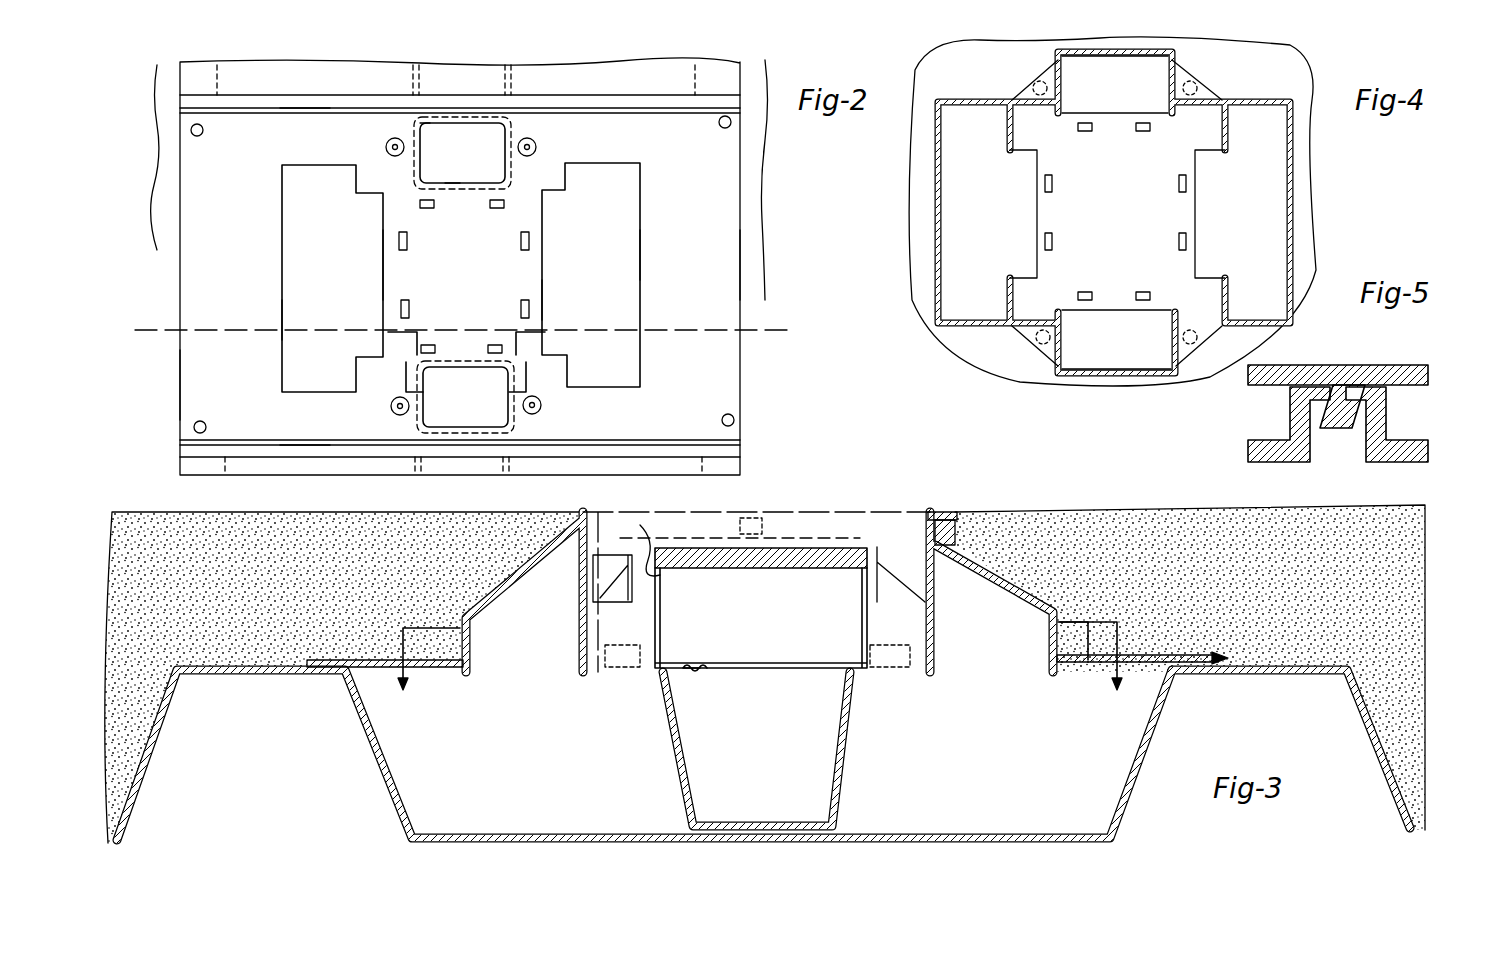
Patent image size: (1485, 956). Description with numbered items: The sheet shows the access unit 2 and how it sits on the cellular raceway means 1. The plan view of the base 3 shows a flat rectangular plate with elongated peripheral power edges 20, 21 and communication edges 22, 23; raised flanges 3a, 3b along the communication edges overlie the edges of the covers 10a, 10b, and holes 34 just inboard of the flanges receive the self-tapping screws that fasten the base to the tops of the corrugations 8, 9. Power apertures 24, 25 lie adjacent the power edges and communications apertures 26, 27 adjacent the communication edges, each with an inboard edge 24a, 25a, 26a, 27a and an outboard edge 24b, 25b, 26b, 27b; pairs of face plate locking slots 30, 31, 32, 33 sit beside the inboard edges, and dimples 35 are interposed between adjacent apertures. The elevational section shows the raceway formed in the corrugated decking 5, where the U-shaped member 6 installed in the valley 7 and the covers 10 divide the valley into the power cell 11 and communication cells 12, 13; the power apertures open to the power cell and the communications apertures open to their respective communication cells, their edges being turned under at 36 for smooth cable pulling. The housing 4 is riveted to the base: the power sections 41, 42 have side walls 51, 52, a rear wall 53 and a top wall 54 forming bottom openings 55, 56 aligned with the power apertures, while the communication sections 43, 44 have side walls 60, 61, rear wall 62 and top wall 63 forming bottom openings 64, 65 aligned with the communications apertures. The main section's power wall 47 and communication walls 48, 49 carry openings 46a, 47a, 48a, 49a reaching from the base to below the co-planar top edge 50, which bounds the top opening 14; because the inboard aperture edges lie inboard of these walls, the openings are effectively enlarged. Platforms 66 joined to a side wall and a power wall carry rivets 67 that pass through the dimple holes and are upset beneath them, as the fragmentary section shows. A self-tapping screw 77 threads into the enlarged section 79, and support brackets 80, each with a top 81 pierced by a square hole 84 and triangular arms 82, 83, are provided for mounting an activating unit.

In FIG. 3, the cellular raceway means 1 is at (944, 843).
In FIG. 3, the access unit 2 is at (829, 506).
In FIG. 2, the base 3 is at (795, 290).
In FIG. 3, the base 3 is at (373, 667).
In FIG. 2, the raised flange 3a is at (306, 440).
In FIG. 2, the raised flange 3b is at (306, 108).
In FIG. 3, the raised flange 3b is at (326, 660).
In FIG. 3, the housing 4 is at (580, 518).
In FIG. 3, the corrugated decking 5 is at (128, 846).
In FIG. 2, the U-shaped member 6 is at (413, 476).
In FIG. 3, the valley 7 is at (1073, 832).
In FIG. 2, the corrugation 8 is at (236, 476).
In FIG. 3, the corrugation 8 is at (391, 783).
In FIG. 2, the corrugation 9 is at (703, 476).
In FIG. 3, the corrugation 9 is at (1144, 738).
In FIG. 4, the covers 10 is at (1122, 261).
In FIG. 2, the cover 10a is at (215, 470).
In FIG. 3, the cover 10a is at (300, 660).
In FIG. 2, the cover 10b is at (186, 80).
In FIG. 2, the power cell 11 is at (421, 88).
In FIG. 3, the power cell 11 is at (774, 779).
In FIG. 2, the communication cell 12 is at (228, 84).
In FIG. 3, the communication cell 12 is at (542, 781).
In FIG. 2, the communication cell 13 is at (690, 100).
In FIG. 3, the communication cell 13 is at (1002, 766).
In FIG. 3, the top opening 14 is at (595, 515).
In FIG. 2, the power edge 20 is at (394, 98).
In FIG. 2, the power edge 21 is at (546, 460).
In FIG. 2, the communication edge 22 is at (182, 386).
In FIG. 3, the communication edge 22 is at (302, 680).
In FIG. 2, the communication edge 23 is at (742, 270).
In FIG. 3, the communication edge 23 is at (1236, 668).
In FIG. 2, the power aperture 24 is at (500, 150).
In FIG. 2, the inboard edge 24a is at (452, 181).
In FIG. 2, the outboard edge 24b is at (418, 124).
In FIG. 2, the power aperture 25 is at (515, 410).
In FIG. 2, the inboard edge 25a is at (492, 370).
In FIG. 2, the outboard edge 25b is at (422, 410).
In FIG. 2, the communications aperture 26 is at (285, 262).
In FIG. 3, the communications aperture 26 is at (463, 676).
In FIG. 2, the inboard edge 26a is at (383, 275).
In FIG. 4, the inboard edge 26a is at (1036, 190).
In FIG. 3, the inboard edge 26a is at (571, 676).
In FIG. 2, the outboard edge 26b is at (283, 318).
In FIG. 2, the communications aperture 27 is at (591, 275).
In FIG. 3, the communications aperture 27 is at (1041, 676).
In FIG. 2, the inboard edge 27a is at (545, 298).
In FIG. 4, the inboard edge 27a is at (1196, 240).
In FIG. 3, the inboard edge 27a is at (936, 676).
In FIG. 2, the outboard edge 27b is at (640, 258).
In FIG. 2, the face plate locking slots 30 is at (496, 208).
In FIG. 4, the face plate locking slots 30 is at (1143, 133).
In FIG. 2, the face plate locking slots 31 is at (493, 345).
In FIG. 2, the face plate locking slots 32 is at (404, 251).
In FIG. 4, the face plate locking slots 32 is at (1049, 194).
In FIG. 2, the face plate locking slots 33 is at (525, 251).
In FIG. 4, the face plate locking slots 33 is at (1182, 194).
In FIG. 2, the holes 34 is at (202, 134).
In FIG. 2, the dimples 35 is at (385, 147).
In FIG. 5, the dimples 35 is at (1285, 425).
In FIG. 3, the dimples 35 is at (921, 655).
In FIG. 3, the turned-under edge 36 is at (701, 676).
In FIG. 4, the power section 41 is at (1122, 86).
In FIG. 3, the power section 41 is at (768, 622).
In FIG. 4, the power section 42 is at (1124, 356).
In FIG. 3, the communication section 43 is at (522, 602).
In FIG. 3, the communication section 44 is at (995, 606).
In FIG. 4, the power opening 46a is at (1058, 115).
In FIG. 3, the power opening 46a is at (662, 641).
In FIG. 4, the power wall means 47 is at (1204, 315).
In FIG. 4, the power opening 47a is at (1105, 291).
In FIG. 4, the communication wall means 48 is at (1221, 138).
In FIG. 4, the communication opening 48a is at (1222, 150).
In FIG. 4, the communication wall means 49 is at (1016, 311).
In FIG. 4, the communication opening 49a is at (991, 254).
In FIG. 3, the top edge 50 is at (938, 510).
In FIG. 4, the side wall 51 is at (1060, 62).
In FIG. 3, the side wall 51 is at (645, 629).
In FIG. 4, the side wall 52 is at (1175, 70).
In FIG. 4, the rear wall 53 is at (1120, 50).
In FIG. 3, the rear wall 53 is at (680, 590).
In FIG. 3, the top wall 54 is at (692, 524).
In FIG. 3, the bottom opening 55 is at (866, 650).
In FIG. 4, the bottom opening 56 is at (1170, 340).
In FIG. 4, the side wall 60 is at (1262, 102).
In FIG. 4, the side wall 61 is at (1250, 325).
In FIG. 4, the rear wall 62 is at (1288, 268).
In FIG. 3, the rear wall 62 is at (1068, 614).
In FIG. 3, the top wall 63 is at (996, 575).
In FIG. 3, the bottom opening 64 is at (1026, 674).
In FIG. 3, the bottom opening 65 is at (470, 676).
In FIG. 5, the platform 66 is at (1325, 370).
In FIG. 3, the platform 66 is at (1056, 626).
In FIG. 5, the rivet 67 is at (1355, 375).
In FIG. 3, the self-tapping screw 77 is at (600, 515).
In FIG. 3, the enlarged section 79 is at (956, 532).
In FIG. 3, the support bracket 80 is at (609, 550).
In FIG. 3, the top 81 is at (662, 582).
In FIG. 3, the support arm 82 is at (870, 590).
In FIG. 3, the support arm 83 is at (920, 590).
In FIG. 3, the square hole 84 is at (590, 605).